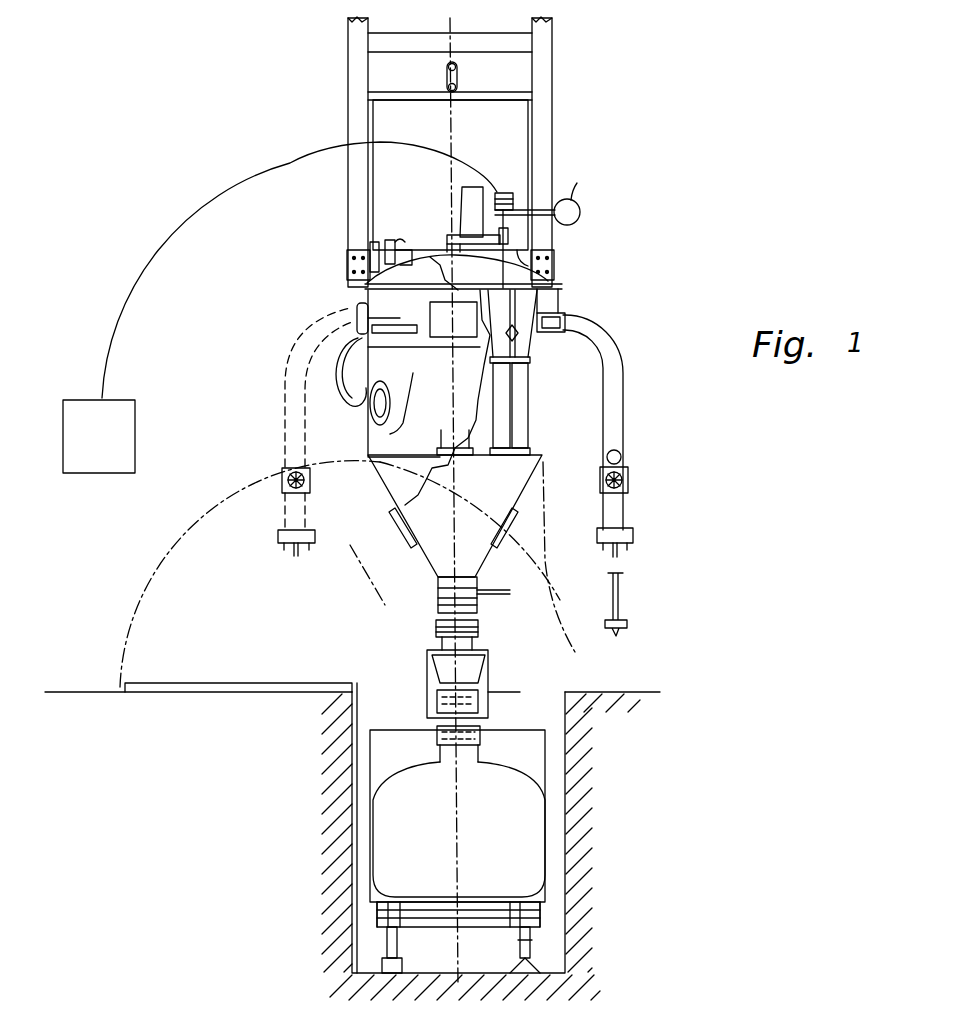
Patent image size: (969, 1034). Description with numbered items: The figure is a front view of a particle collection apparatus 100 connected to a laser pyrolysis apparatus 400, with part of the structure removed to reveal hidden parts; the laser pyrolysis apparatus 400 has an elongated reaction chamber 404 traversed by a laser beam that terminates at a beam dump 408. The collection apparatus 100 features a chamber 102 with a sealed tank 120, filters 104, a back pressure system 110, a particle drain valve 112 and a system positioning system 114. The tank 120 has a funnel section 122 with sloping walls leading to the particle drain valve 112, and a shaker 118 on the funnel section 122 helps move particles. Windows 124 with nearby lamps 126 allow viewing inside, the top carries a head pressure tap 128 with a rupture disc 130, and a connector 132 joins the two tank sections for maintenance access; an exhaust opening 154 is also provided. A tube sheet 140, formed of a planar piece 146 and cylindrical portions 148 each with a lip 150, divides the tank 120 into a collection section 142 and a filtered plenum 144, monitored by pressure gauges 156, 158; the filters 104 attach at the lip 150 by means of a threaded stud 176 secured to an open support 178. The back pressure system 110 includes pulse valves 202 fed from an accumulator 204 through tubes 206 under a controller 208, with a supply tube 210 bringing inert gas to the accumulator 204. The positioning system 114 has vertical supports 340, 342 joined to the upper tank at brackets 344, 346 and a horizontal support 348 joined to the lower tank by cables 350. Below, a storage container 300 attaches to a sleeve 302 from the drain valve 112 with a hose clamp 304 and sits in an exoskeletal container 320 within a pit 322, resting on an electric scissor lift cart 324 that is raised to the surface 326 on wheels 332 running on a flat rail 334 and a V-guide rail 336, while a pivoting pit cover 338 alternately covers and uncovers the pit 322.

The particle collection apparatus 100 is at (479, 445).
The chamber 102 is at (357, 298).
The filters 104 is at (530, 452).
The back pressure system 110 is at (558, 110).
The particle drain valve 112 is at (437, 603).
The system positioning system 114 is at (334, 78).
The shaker 118 is at (393, 520).
The tank 120 is at (354, 255).
The funnel section 122 is at (428, 558).
The windows 124 is at (376, 405).
The lamps 126 is at (345, 392).
The head pressure tap 128 is at (460, 155).
The rupture disc 130 is at (480, 243).
The connector 132 is at (352, 314).
The tube sheet 140 is at (552, 303).
The collection section 142 is at (492, 493).
The filtered plenum 144 is at (544, 285).
The planar piece 146 is at (565, 291).
The cylindrical portions 148 is at (568, 326).
The lip 150 is at (522, 370).
The exhaust opening 154 is at (380, 240).
The pressure gauge 156 is at (400, 430).
The pressure gauge 158 is at (362, 298).
The threaded stud 176 is at (528, 440).
The support 178 is at (518, 337).
The pulse valves 202 is at (507, 193).
The accumulator 204 is at (566, 199).
The tubes 206 is at (487, 212).
The controller 208 is at (85, 462).
The supply tube 210 is at (563, 233).
The storage container 300 is at (520, 795).
The sleeve 302 is at (430, 628).
The hose clamp 304 is at (478, 640).
The exoskeletal container 320 is at (370, 740).
The pit 322 is at (380, 935).
The electric scissor lift cart 324 is at (533, 928).
The surface 326 is at (638, 692).
The wheels 332 is at (386, 945).
The flat rail 334 is at (382, 968).
The V-guide rail 336 is at (522, 975).
The pit cover 338 is at (136, 689).
The vertical support 340 is at (350, 40).
The vertical support 342 is at (552, 32).
The bracket 344 is at (350, 280).
The bracket 346 is at (552, 265).
The horizontal support 348 is at (383, 92).
The cables 350 is at (376, 115).
The laser pyrolysis apparatus 400 is at (668, 542).
The reaction chamber 404 is at (630, 470).
The beam dump 408 is at (617, 395).